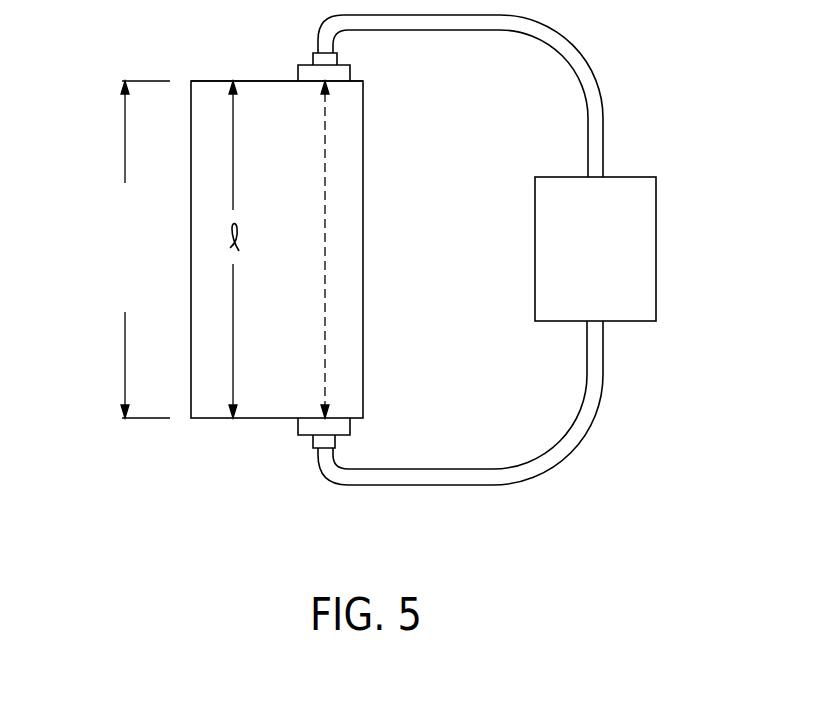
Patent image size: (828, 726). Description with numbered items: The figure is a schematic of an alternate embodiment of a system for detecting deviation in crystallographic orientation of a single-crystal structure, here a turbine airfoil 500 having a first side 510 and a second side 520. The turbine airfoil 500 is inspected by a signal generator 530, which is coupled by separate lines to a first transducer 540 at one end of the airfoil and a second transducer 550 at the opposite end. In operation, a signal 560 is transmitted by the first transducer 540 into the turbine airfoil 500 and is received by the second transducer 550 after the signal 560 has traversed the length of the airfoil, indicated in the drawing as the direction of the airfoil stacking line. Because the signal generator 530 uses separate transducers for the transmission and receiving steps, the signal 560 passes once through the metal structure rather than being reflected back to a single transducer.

The turbine airfoil 500 is at (160, 457).
The first side 510 is at (270, 418).
The second side 520 is at (270, 80).
The signal generator 530 is at (540, 251).
The first transducer 540 is at (345, 425).
The second transducer 550 is at (347, 73).
The signal 560 is at (325, 285).